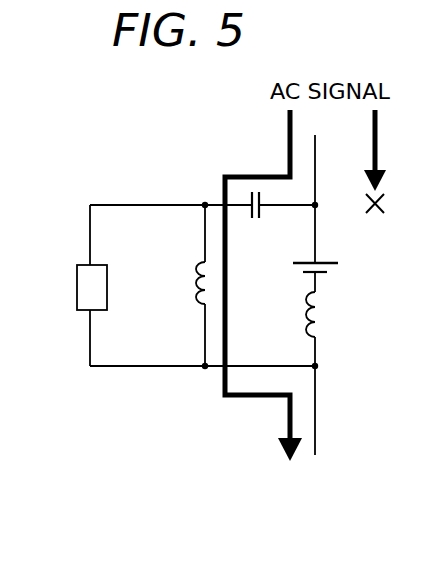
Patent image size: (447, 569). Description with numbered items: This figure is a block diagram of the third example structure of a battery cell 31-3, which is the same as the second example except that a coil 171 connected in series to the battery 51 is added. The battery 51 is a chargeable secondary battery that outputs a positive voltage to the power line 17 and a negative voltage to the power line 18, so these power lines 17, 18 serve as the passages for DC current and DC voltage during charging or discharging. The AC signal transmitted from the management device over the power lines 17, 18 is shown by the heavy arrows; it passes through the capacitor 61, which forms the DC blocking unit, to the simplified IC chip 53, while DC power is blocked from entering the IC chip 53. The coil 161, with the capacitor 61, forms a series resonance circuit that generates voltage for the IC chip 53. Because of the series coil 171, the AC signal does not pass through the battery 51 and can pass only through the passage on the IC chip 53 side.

The battery cell 31-3 is at (196, 466).
The power line 17 is at (320, 158).
The power line 18 is at (318, 418).
The capacitor 61 is at (257, 220).
The battery 51 is at (320, 262).
The coil 171 is at (325, 320).
The coil 161 is at (195, 264).
The IC chip 53 is at (77, 288).